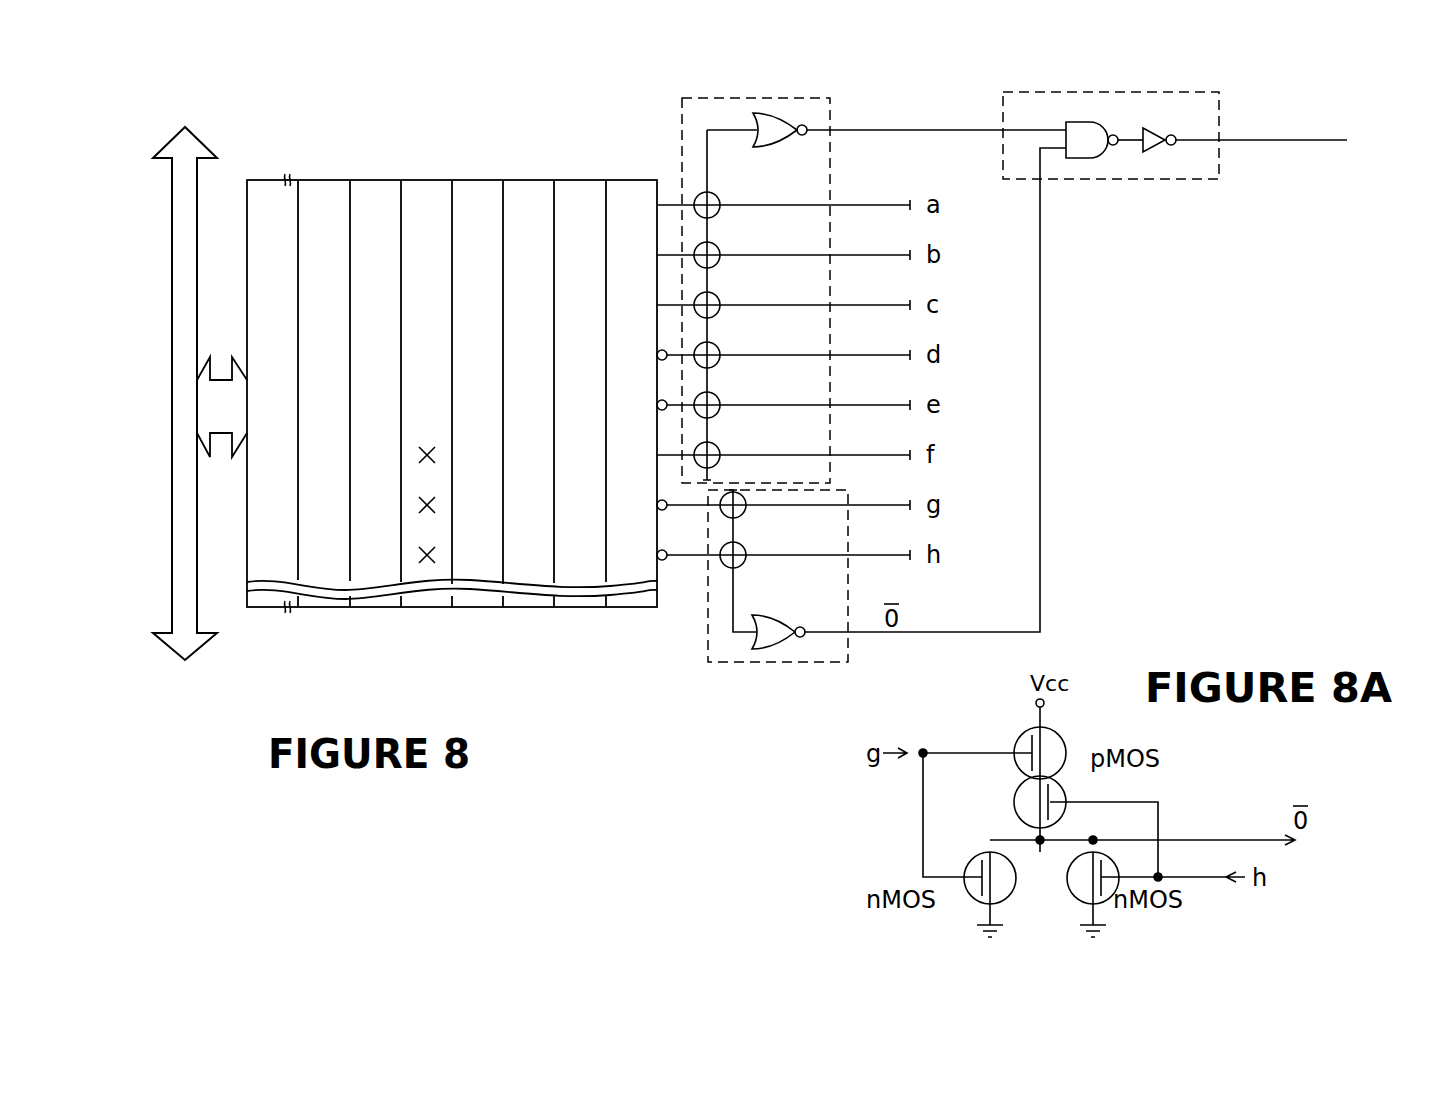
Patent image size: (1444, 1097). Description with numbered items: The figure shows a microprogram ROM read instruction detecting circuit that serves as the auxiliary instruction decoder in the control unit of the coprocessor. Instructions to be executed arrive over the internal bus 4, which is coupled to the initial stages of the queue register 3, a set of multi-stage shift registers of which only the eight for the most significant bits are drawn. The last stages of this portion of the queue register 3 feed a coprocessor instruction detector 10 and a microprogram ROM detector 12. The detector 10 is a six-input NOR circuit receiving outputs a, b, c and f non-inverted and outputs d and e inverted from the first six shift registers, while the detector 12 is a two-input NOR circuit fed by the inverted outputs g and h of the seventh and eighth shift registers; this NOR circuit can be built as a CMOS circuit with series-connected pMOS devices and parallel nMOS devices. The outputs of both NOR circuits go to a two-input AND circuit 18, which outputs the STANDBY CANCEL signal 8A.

The queue register 3 is at (597, 608).
The internal bus 4 is at (171, 604).
The coprocessor instruction detector 10 is at (832, 176).
The microprogram ROM detector 12 is at (718, 664).
The two-input AND circuit 18 is at (1125, 181).
The STANDBY CANCEL signal 8A is at (1268, 140).